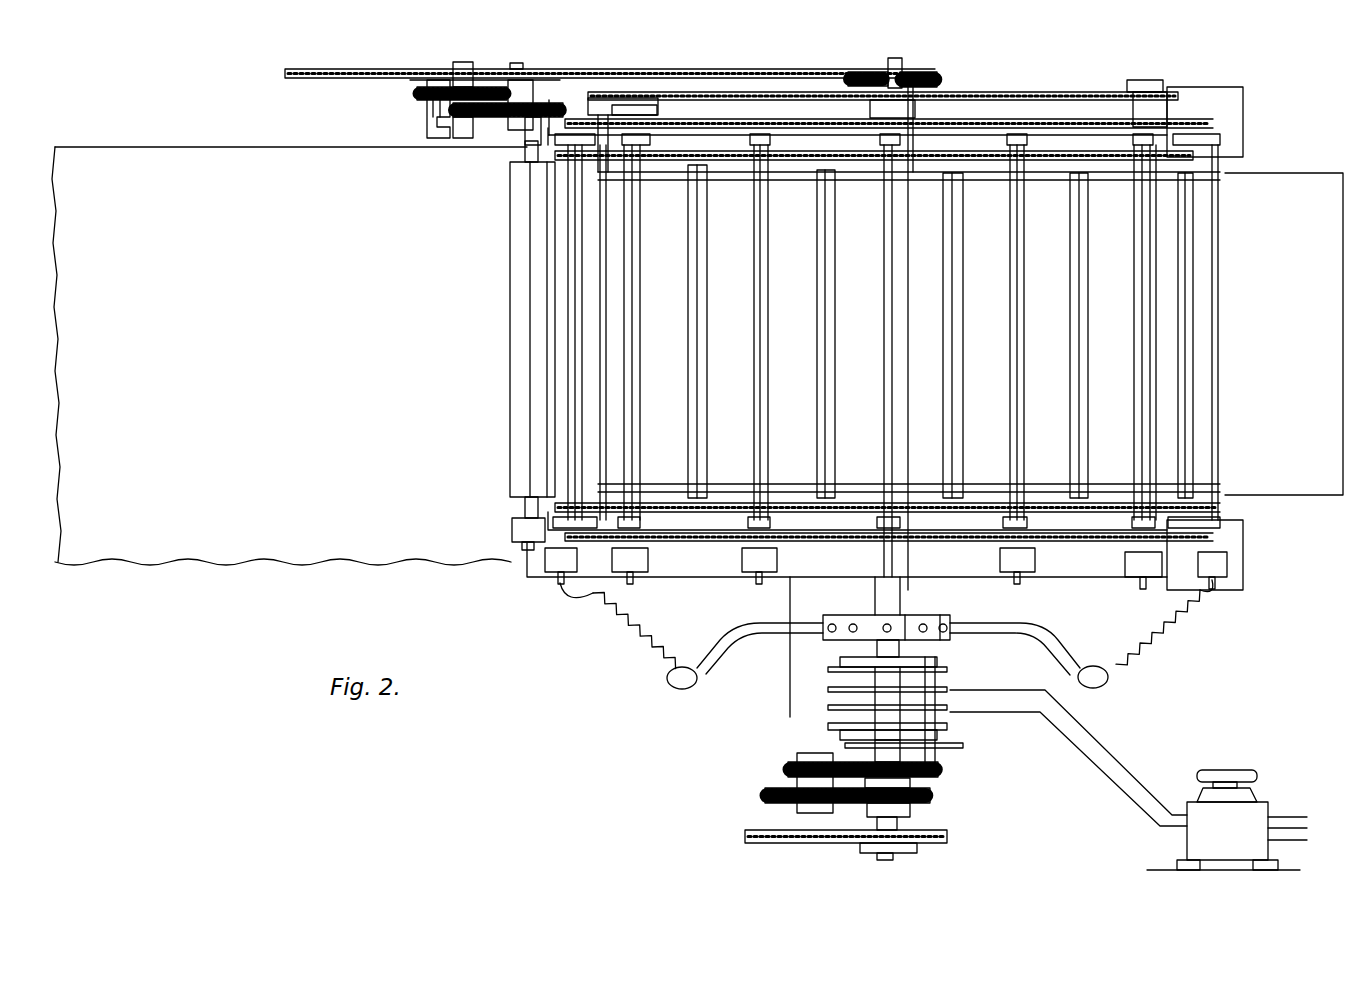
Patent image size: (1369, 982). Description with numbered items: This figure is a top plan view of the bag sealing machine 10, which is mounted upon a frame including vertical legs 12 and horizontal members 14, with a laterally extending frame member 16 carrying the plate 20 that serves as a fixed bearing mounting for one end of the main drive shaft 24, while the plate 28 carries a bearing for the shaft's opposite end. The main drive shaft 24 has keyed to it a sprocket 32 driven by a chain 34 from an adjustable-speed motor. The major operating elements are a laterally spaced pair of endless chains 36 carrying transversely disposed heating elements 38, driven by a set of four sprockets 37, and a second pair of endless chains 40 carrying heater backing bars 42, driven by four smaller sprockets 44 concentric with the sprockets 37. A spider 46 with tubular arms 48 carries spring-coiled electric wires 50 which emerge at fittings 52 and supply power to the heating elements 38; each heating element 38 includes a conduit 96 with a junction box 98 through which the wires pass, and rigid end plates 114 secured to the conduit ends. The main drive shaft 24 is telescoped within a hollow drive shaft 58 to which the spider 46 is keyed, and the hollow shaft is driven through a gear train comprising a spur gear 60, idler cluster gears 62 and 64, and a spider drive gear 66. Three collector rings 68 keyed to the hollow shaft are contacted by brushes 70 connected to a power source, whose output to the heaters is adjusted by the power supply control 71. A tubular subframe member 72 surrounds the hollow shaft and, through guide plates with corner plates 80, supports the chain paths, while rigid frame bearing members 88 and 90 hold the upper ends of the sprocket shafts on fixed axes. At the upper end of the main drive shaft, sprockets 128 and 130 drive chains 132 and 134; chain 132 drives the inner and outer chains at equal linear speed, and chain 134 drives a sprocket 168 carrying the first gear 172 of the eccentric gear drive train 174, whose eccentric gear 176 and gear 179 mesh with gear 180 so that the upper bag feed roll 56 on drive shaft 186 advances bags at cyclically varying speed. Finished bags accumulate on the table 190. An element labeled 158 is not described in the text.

The machine 10 is at (1317, 63).
The vertical legs 12 is at (1233, 146).
The horizontal members 14 is at (940, 582).
The laterally extending frame member 16 is at (800, 718).
The plate 20 is at (930, 782).
The main drive shaft 24 is at (887, 862).
The plate 28 is at (860, 115).
The sprocket 32 is at (923, 847).
The chain 34 is at (760, 843).
The endless chains 36 is at (1190, 118).
The sprockets 37 is at (574, 119).
The heating elements 38 is at (578, 259).
The endless chains 40 is at (1093, 151).
The heater backing bars 42 is at (585, 283).
The sprockets 44 is at (600, 177).
The spider 46 is at (1125, 697).
The tubular arms 48 is at (853, 623).
The electric wires 50 is at (627, 640).
The fittings 52 is at (667, 685).
The upper bag feed roll 56 is at (512, 350).
The hollow drive shaft 58 is at (880, 757).
The spur gear 60 is at (927, 793).
The idler cluster gear 62 is at (763, 797).
The idler cluster gear 64 is at (780, 767).
The spider drive gear 66 is at (940, 767).
The collector rings 68 is at (847, 720).
The brushes 70 is at (953, 722).
The power supply control 71 is at (1257, 812).
The tubular member 72 is at (880, 262).
The corner plates 80 is at (1042, 175).
The rigid frame bearing member 88 is at (660, 100).
The rigid frame bearing member 90 is at (1167, 110).
The conduit 96 is at (760, 202).
The junction box 98 is at (643, 557).
The end plates 114 is at (770, 139).
The sprocket 128 is at (927, 72).
The sprocket 130 is at (868, 72).
The chain 132 is at (1040, 62).
The chain 134 is at (285, 69).
The chain stop 158 is at (540, 38).
The sprocket 168 is at (418, 70).
The first gear 172 is at (417, 93).
The eccentric gear drive train 174 is at (433, 107).
The eccentric gear 176 is at (475, 87).
The gear 179 is at (477, 137).
The gear 180 is at (510, 120).
The drive shaft 186 is at (530, 155).
The table 190 is at (1328, 170).